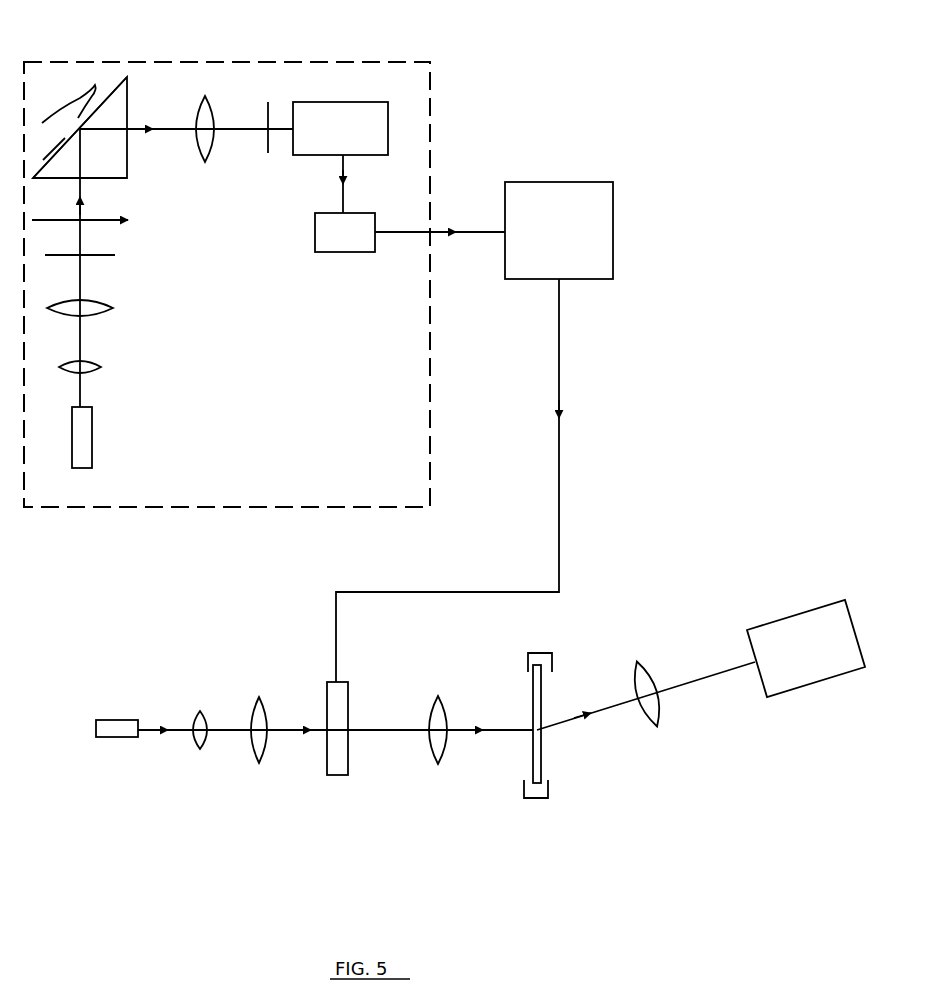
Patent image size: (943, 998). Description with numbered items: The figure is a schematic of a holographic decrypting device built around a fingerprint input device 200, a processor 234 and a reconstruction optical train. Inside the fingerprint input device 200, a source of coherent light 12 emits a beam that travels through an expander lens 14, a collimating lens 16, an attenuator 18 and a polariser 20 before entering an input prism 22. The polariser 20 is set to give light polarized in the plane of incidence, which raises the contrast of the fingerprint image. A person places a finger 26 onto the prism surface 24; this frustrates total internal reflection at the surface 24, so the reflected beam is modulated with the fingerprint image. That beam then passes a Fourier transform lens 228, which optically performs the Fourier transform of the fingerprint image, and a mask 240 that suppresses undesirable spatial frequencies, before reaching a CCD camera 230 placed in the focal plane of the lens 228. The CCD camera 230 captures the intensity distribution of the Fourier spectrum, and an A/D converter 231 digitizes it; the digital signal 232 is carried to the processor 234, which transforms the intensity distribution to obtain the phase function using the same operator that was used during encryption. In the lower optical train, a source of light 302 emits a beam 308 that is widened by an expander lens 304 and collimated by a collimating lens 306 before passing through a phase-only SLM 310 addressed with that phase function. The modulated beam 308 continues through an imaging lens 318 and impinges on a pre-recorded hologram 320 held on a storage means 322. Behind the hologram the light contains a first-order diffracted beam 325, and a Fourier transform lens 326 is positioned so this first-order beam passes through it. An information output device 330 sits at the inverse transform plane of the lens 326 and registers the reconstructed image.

The source of coherent light 12 is at (94, 437).
The expander lens 14 is at (97, 369).
The collimating lens 16 is at (96, 307).
The attenuator 18 is at (96, 243).
The polariser 20 is at (93, 212).
The input prism 22 is at (110, 182).
The prism surface 24 is at (116, 82).
The finger 26 is at (65, 103).
The fingerprint input device 200 is at (248, 58).
The Fourier transform lens 228 is at (203, 143).
The mask 240 is at (264, 105).
The CCD camera 230 is at (340, 117).
The A/D converter 231 is at (320, 203).
The signal line 232 is at (440, 219).
The processor 234 is at (559, 216).
The source of light 302 is at (115, 745).
The expander lens 304 is at (198, 746).
The collimating lens 306 is at (258, 744).
The beam 308 is at (335, 721).
The phase-only SLM 310 is at (338, 747).
The imaging lens 318 is at (439, 744).
The pre-recorded hologram 320 is at (527, 692).
The storage means 322 is at (533, 803).
The deflected beam 325 is at (646, 696).
The Fourier transform lens 326 is at (653, 706).
The information output device 330 is at (806, 657).